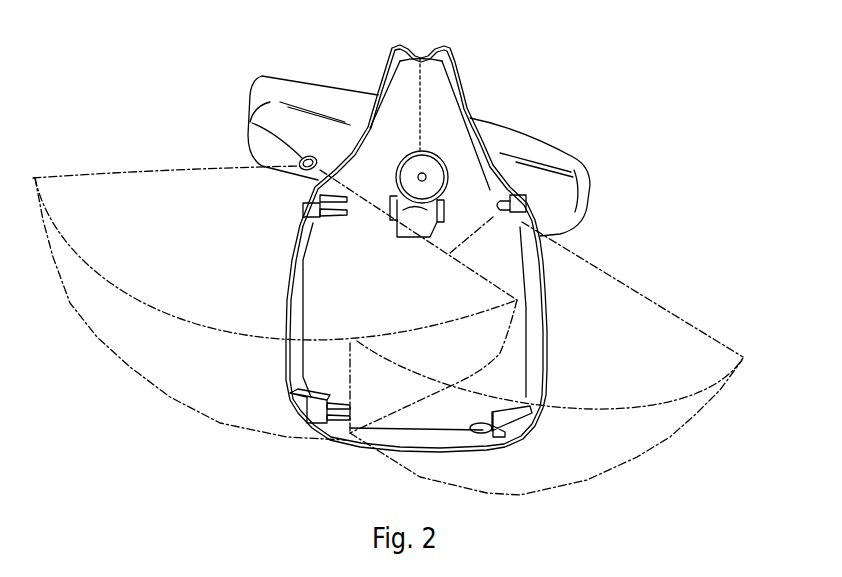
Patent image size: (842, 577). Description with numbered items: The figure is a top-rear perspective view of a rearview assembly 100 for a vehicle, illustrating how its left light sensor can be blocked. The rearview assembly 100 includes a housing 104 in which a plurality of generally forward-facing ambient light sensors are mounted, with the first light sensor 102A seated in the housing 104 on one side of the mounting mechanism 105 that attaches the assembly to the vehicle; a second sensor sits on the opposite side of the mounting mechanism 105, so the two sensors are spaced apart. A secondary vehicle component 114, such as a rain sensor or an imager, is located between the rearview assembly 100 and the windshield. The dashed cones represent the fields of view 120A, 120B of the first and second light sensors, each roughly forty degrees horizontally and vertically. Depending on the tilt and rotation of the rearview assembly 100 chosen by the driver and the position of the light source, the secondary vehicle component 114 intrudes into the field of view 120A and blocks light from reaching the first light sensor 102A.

The rearview assembly 100 is at (634, 106).
The first light sensor 102A is at (252, 123).
The housing 104 is at (592, 168).
The mounting mechanism 105 is at (408, 148).
The secondary vehicle component 114 is at (468, 93).
The field of view of the first light sensor 120A is at (140, 170).
The field of view of the second light sensor 120B is at (699, 330).